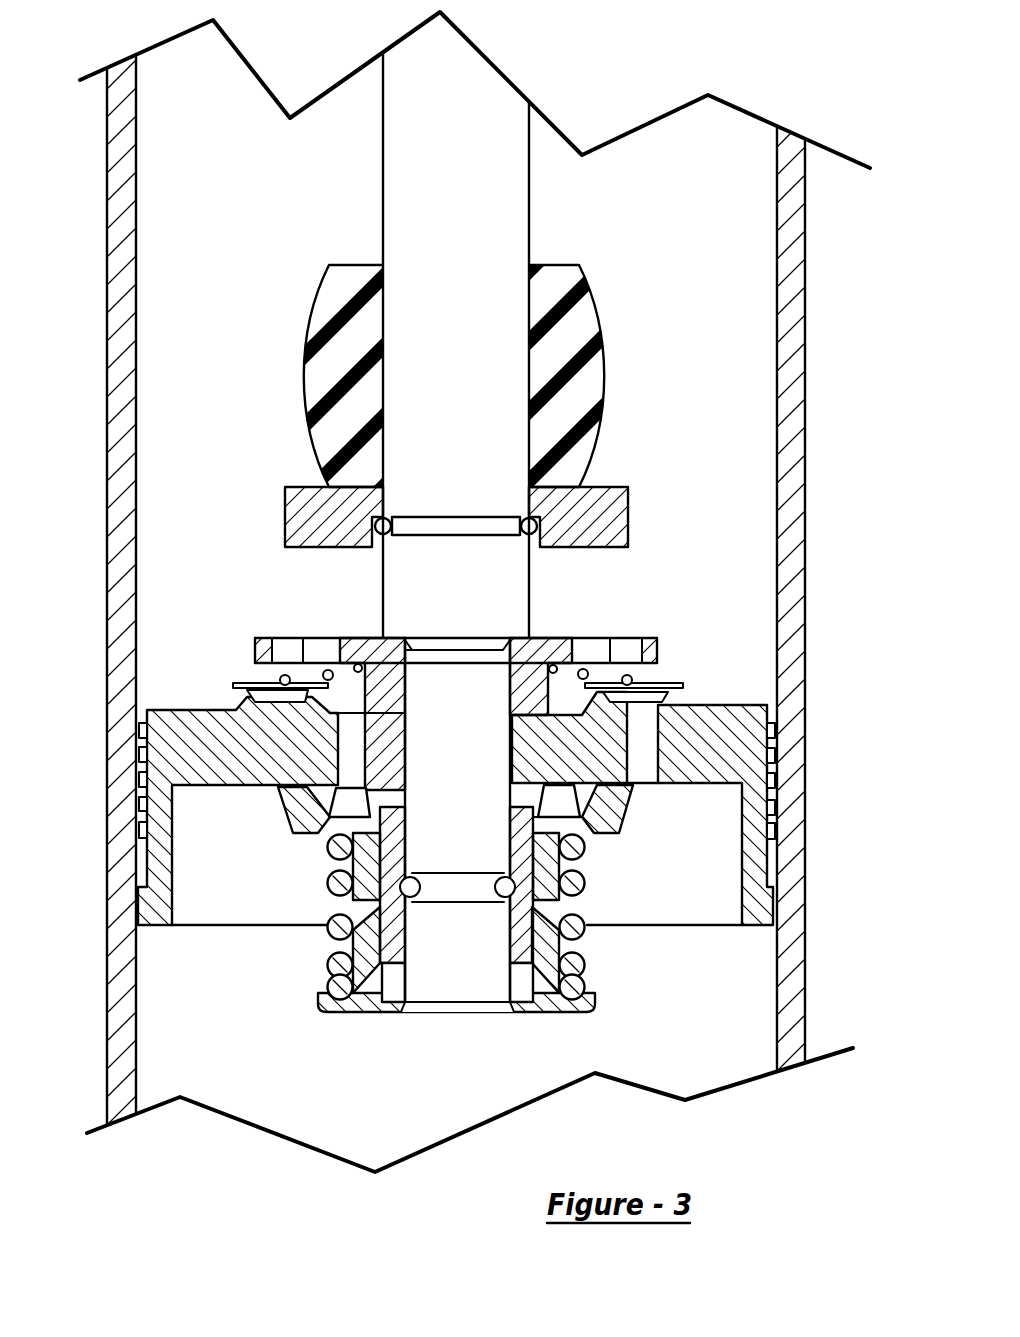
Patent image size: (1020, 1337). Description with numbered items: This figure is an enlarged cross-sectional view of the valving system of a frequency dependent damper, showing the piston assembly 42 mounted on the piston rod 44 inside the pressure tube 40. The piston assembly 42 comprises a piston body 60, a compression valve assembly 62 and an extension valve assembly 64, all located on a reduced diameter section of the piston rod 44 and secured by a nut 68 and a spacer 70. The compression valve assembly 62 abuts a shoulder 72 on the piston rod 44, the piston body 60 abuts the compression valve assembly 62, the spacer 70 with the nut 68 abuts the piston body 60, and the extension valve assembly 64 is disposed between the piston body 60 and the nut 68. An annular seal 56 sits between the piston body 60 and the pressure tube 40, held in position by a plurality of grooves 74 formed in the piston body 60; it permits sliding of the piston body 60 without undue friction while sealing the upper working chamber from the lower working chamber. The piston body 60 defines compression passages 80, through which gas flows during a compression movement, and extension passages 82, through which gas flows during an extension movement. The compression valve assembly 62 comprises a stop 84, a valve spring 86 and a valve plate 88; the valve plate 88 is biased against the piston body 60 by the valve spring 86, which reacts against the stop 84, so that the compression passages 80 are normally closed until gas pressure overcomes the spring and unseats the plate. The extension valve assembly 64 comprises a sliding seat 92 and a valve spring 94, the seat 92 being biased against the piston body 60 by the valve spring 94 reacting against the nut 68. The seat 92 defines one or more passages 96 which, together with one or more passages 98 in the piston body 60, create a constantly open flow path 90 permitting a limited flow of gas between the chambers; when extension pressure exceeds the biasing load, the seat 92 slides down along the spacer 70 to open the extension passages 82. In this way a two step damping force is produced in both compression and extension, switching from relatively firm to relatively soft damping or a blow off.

The pressure tube 40 is at (787, 442).
The piston assembly 42 is at (699, 577).
The piston rod 44 is at (458, 167).
The seal 56 is at (778, 826).
The piston body 60 is at (643, 738).
The compression valve assembly 62 is at (709, 653).
The extension valve assembly 64 is at (701, 932).
The nut 68 is at (348, 1008).
The spacer 70 is at (520, 868).
The shoulder 72 is at (422, 643).
The grooves 74 is at (140, 777).
The compression passages 80 is at (682, 740).
The extension passages 82 is at (352, 742).
The stop 84 is at (262, 638).
The valve spring 86 is at (280, 677).
The valve plate 88 is at (243, 689).
The flow path 90 is at (252, 806).
The sliding seat 92 is at (613, 808).
The valve spring 94 is at (588, 963).
The passages 96 is at (295, 797).
The passages 98 is at (300, 832).